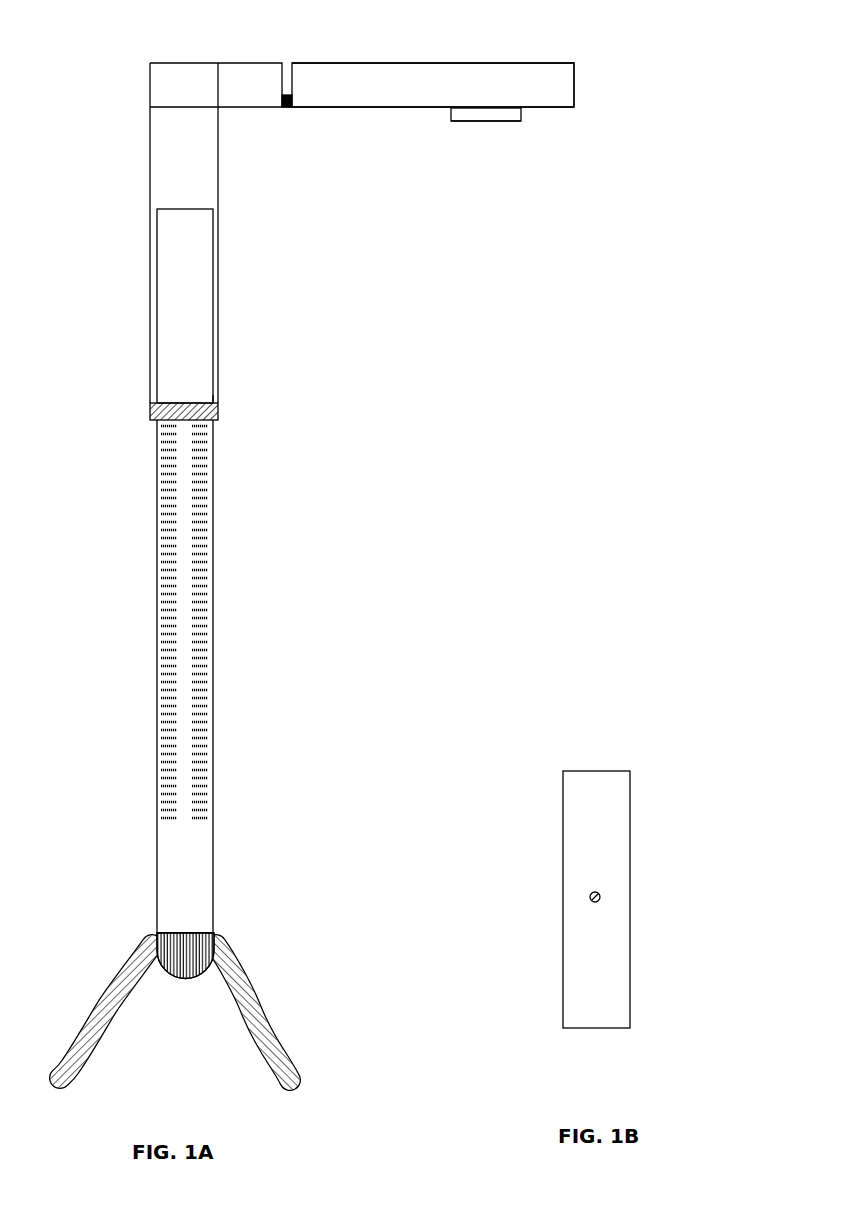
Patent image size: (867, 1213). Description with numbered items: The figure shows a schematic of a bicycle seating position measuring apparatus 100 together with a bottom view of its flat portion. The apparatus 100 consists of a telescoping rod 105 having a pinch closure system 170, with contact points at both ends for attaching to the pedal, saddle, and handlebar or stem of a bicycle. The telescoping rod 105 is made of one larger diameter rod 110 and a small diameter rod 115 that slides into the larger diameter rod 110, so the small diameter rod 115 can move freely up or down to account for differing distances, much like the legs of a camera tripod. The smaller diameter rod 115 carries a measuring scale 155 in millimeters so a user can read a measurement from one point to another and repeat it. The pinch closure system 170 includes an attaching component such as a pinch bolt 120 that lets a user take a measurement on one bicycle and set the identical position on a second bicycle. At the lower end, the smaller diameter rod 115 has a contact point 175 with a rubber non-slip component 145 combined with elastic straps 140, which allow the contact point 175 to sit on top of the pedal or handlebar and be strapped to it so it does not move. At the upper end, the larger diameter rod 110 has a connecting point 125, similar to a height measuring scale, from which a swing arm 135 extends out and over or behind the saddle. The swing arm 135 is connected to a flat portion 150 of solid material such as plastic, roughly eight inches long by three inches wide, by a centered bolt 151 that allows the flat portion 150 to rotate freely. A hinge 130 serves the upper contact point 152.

In FIG. 1A, the bicycle seating position measuring apparatus 100 is at (611, 60).
In FIG. 1A, the telescoping rod 105 is at (128, 362).
In FIG. 1A, the larger diameter rod 110 is at (218, 170).
In FIG. 1A, the small diameter rod 115 is at (214, 632).
In FIG. 1A, the pinch bolt 120 is at (218, 412).
In FIG. 1A, the connecting point 125 is at (160, 63).
In FIG. 1A, the hinge 130 is at (292, 108).
In FIG. 1A, the swing arm 135 is at (412, 63).
In FIG. 1A, the elastic straps 140 is at (268, 1035).
In FIG. 1A, the rubber non-slip component 145 is at (194, 963).
In FIG. 1A, the flat portion 150 is at (522, 118).
In FIG. 1B, the flat portion 150 is at (668, 766).
In FIG. 1B, the centered bolt 151 is at (600, 893).
In FIG. 1A, the upper contact point 152 is at (483, 121).
In FIG. 1A, the measuring scale 155 is at (203, 552).
In FIG. 1A, the pinch closure system 170 is at (220, 396).
In FIG. 1A, the contact point 175 is at (192, 978).